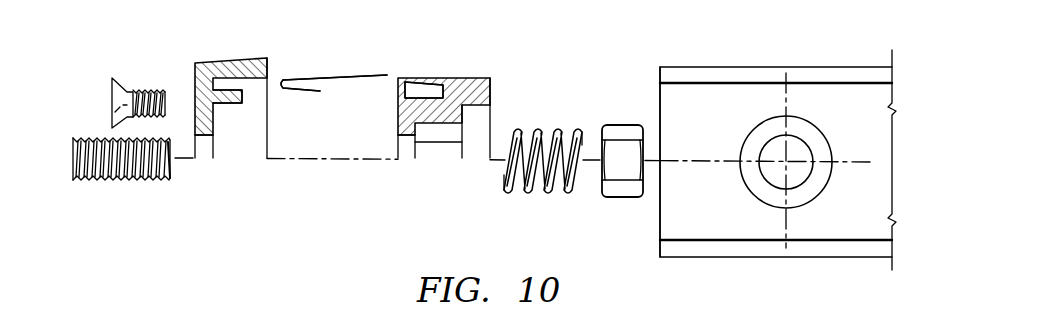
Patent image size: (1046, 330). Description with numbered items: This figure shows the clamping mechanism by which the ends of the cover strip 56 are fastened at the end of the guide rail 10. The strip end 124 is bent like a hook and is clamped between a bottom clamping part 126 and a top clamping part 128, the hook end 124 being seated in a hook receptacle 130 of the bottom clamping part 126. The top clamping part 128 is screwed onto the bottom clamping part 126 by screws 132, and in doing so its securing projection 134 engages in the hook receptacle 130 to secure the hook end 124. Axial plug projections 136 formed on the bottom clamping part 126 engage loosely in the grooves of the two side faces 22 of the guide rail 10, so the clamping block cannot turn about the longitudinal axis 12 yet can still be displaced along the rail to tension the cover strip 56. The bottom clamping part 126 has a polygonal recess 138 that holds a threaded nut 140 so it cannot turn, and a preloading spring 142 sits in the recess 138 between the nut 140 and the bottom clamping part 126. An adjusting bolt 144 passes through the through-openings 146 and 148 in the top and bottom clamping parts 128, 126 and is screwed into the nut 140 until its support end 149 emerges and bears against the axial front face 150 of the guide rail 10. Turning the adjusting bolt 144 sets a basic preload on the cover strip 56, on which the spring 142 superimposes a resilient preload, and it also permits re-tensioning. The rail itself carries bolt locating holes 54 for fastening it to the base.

The guide rail 10 is at (760, 163).
The rail longitudinal axis 12 is at (857, 158).
The side faces 22 is at (808, 65).
The bolt locating holes 54 is at (768, 180).
The cover strip 56 is at (373, 73).
The strip end 124 is at (303, 87).
The bottom clamping part 126 is at (468, 77).
The top clamping part 128 is at (227, 60).
The hook receptacle 130 is at (407, 97).
The screws 132 is at (150, 90).
The securing projection 134 is at (232, 104).
The axial plug projections 136 is at (490, 90).
The polygonal recess 138 is at (437, 127).
The threaded nut 140 is at (621, 132).
The preloading spring 142 is at (548, 194).
The adjusting bolt 144 is at (118, 181).
The through-opening 146 is at (207, 143).
The through-opening 148 is at (407, 137).
The support end 149 is at (170, 167).
The axial front face 150 is at (658, 232).